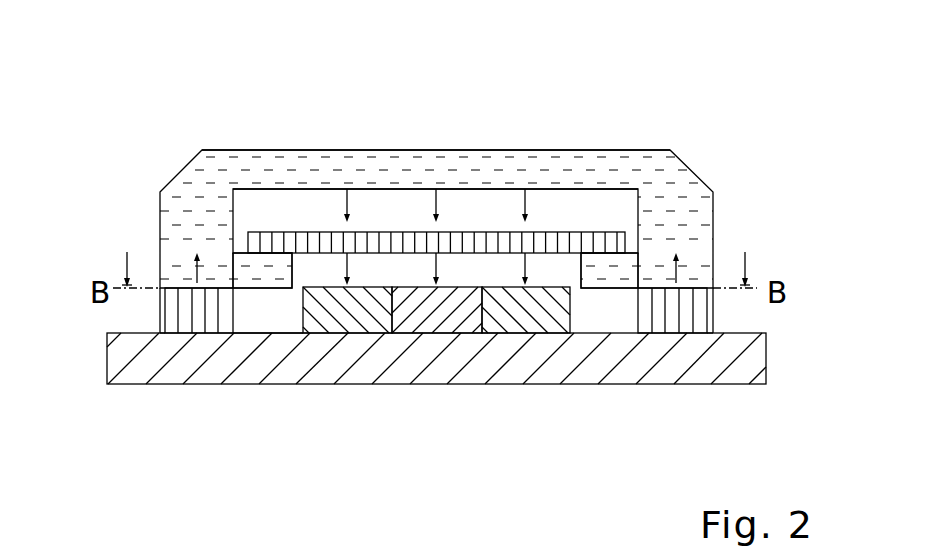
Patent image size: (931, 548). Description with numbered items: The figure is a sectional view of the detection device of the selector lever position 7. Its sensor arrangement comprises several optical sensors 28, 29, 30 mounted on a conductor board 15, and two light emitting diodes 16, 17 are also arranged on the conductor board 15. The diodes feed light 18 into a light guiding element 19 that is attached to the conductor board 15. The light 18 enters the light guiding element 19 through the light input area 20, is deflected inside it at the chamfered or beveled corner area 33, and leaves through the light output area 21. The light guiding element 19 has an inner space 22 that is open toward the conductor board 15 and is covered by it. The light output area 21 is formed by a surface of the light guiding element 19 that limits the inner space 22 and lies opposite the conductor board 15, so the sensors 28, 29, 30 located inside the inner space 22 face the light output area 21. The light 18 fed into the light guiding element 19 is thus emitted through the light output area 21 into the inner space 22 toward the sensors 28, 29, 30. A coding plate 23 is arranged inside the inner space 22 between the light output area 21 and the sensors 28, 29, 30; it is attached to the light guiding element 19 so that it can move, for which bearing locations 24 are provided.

The detection device of the selector lever position 7 is at (752, 136).
The conductor board 15 is at (576, 362).
The light emitting diode 16 is at (167, 307).
The light emitting diode 17 is at (692, 303).
The light 18 is at (522, 268).
The light guiding element 19 is at (243, 173).
The light input area 20 is at (207, 293).
The light output area 21 is at (292, 193).
The inner space 22 is at (268, 318).
The coding plate 23 is at (588, 235).
The bearing locations 24 is at (263, 277).
The optical sensor 28 is at (352, 318).
The optical sensor 29 is at (432, 315).
The optical sensor 30 is at (523, 313).
The chamfered or beveled corner area 33 is at (179, 173).